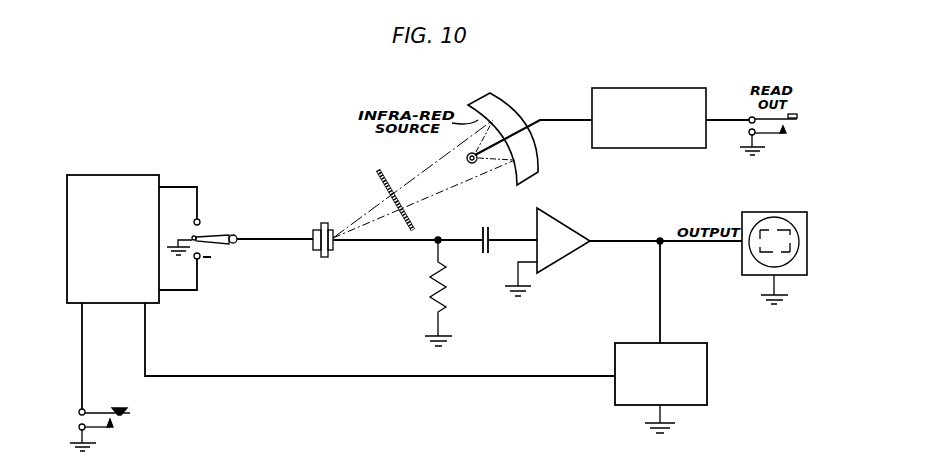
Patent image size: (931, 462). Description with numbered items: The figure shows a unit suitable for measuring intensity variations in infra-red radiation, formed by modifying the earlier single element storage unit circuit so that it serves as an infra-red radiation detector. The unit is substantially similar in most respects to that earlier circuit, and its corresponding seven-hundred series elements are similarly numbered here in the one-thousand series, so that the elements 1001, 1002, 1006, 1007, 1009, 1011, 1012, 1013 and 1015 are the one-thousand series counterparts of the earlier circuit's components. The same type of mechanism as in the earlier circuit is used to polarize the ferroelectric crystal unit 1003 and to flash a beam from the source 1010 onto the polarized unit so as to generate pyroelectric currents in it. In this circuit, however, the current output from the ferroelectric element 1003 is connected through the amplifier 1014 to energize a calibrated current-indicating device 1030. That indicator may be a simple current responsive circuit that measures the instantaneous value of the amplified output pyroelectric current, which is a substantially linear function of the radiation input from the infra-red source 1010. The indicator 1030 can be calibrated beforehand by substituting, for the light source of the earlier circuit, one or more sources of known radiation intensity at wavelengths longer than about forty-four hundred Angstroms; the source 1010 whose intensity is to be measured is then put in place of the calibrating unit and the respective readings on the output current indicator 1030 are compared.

The pulse source 1001 is at (112, 185).
The polarity switch 1002 is at (213, 230).
The ferroelectric crystal unit 1003 is at (333, 253).
The load resistor 1006 is at (430, 294).
The concave mirror 1007 is at (482, 95).
The ground switch 1009 is at (135, 415).
The infra-red source 1010 is at (465, 158).
The energizing circuit and pulsing means 1011 is at (633, 150).
The read out switch 1012 is at (794, 128).
The coupling capacitor 1013 is at (502, 216).
The amplifier 1014 is at (553, 225).
The clamp circuit 1015 is at (707, 378).
The current-indicating device 1030 is at (747, 260).